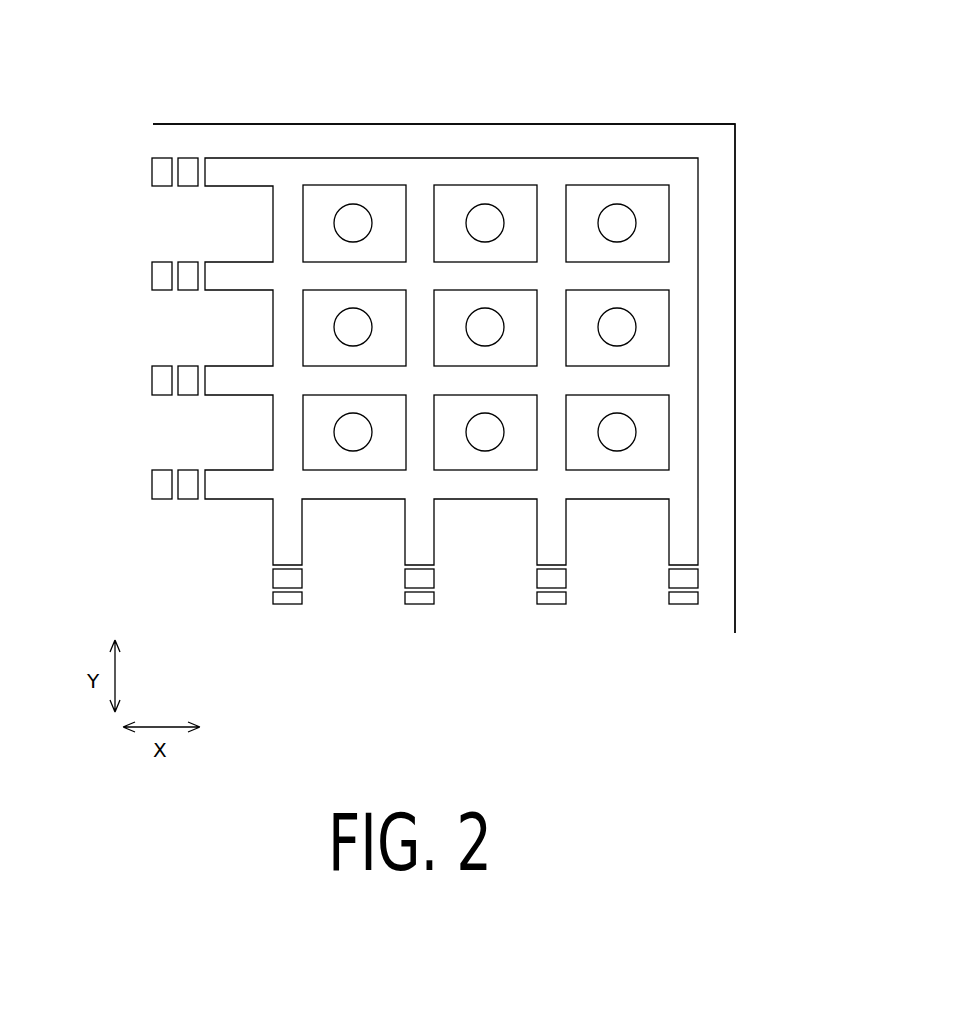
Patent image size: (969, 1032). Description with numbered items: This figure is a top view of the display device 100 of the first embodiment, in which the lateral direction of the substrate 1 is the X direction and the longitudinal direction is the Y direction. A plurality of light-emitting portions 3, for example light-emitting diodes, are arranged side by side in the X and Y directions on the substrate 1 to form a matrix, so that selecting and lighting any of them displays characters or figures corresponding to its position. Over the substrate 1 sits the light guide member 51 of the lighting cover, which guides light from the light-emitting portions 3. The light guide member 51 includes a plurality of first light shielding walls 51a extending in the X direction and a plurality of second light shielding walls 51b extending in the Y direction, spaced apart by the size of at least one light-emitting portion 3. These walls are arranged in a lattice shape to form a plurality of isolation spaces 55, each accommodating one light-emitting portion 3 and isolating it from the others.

The substrate 1 is at (450, 122).
The display device 100 is at (731, 97).
The light guide member 51 is at (537, 157).
The first light shielding walls 51a is at (115, 330).
The second light shielding walls 51b is at (482, 630).
The isolation space 55 is at (663, 417).
The light-emitting portion 3 is at (627, 446).